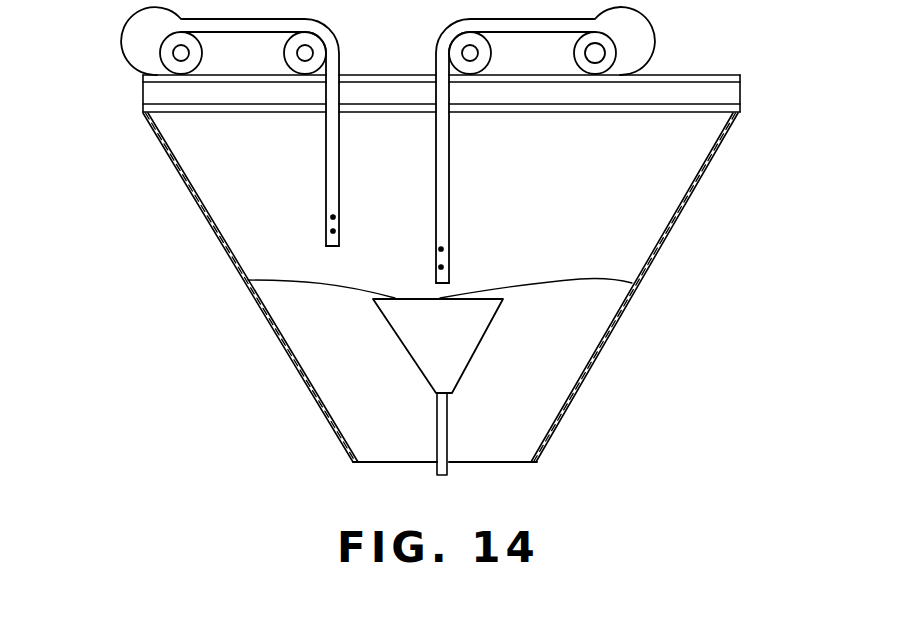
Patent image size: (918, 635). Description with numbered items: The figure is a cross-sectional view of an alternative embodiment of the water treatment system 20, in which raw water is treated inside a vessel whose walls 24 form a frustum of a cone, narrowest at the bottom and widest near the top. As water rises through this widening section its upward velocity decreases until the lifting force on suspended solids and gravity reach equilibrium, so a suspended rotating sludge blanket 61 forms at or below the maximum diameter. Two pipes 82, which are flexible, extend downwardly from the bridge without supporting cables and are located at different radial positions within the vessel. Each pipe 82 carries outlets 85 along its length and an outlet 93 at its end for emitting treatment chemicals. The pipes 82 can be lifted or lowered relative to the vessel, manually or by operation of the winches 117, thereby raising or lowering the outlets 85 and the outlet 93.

The water treatment system 20 is at (197, 295).
The walls 24 is at (655, 260).
The rotating sludge blanket 61 is at (320, 285).
The pipe 82 is at (325, 141).
The outlets 85 is at (334, 231).
The outlet 93 is at (331, 248).
The winches 117 is at (176, 53).